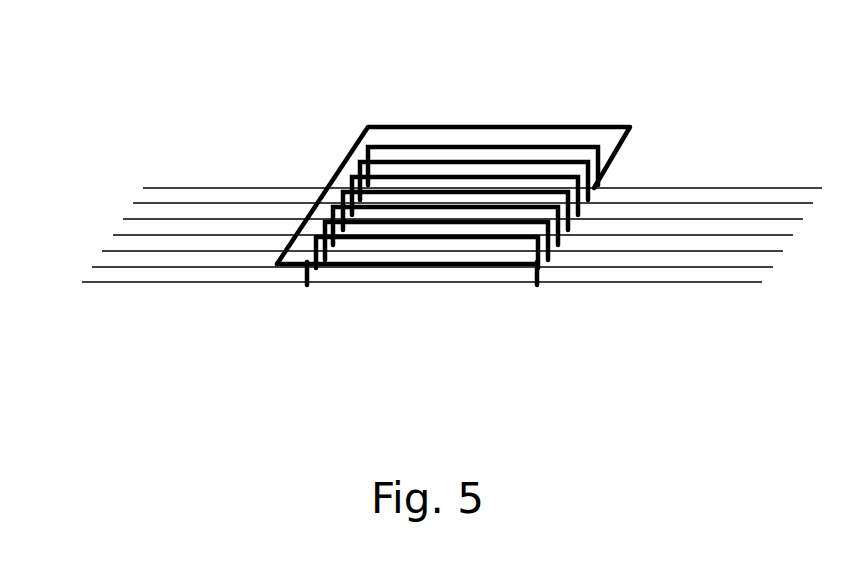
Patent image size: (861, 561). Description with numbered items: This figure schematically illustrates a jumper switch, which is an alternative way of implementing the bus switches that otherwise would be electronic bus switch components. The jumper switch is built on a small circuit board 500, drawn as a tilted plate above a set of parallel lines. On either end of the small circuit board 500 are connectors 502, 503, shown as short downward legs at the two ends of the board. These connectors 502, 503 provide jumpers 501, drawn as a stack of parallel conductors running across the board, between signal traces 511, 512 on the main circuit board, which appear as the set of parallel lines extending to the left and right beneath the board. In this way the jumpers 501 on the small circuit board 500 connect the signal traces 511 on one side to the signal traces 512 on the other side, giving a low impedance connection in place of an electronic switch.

The small circuit board 500 is at (490, 128).
The jumpers 501 is at (393, 240).
The connector 502 is at (305, 296).
The connector 503 is at (540, 297).
The signal traces 511 is at (101, 290).
The signal traces 512 is at (747, 292).